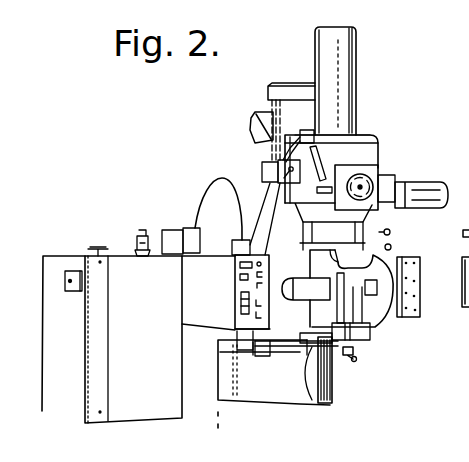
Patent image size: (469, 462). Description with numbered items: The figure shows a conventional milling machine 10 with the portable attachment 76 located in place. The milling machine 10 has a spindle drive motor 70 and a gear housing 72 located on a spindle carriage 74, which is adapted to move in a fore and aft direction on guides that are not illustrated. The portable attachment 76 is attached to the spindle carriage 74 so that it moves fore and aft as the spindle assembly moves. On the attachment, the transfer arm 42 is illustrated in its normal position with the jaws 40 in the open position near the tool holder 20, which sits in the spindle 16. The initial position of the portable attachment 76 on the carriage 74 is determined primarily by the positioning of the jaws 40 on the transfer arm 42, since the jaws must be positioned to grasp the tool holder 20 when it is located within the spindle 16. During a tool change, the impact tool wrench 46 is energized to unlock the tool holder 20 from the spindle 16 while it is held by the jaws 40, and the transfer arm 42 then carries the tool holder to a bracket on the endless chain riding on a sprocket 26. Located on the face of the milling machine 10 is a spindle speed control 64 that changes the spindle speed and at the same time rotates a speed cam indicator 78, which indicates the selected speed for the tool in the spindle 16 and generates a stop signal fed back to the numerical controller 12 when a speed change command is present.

The milling machine 10 is at (430, 119).
The numerical controller 12 is at (415, 320).
The spindle 16 is at (340, 348).
The tool holder 20 is at (355, 360).
The sprocket 26 is at (463, 250).
The jaws 40 is at (332, 395).
The transfer arm 42 is at (273, 350).
The impact tool wrench 46 is at (358, 73).
The spindle speed control 64 is at (436, 182).
The spindle drive motor 70 is at (268, 106).
The gear housing 72 is at (369, 133).
The spindle carriage 74 is at (280, 273).
The portable attachment 76 is at (46, 255).
The speed cam indicator 78 is at (363, 185).